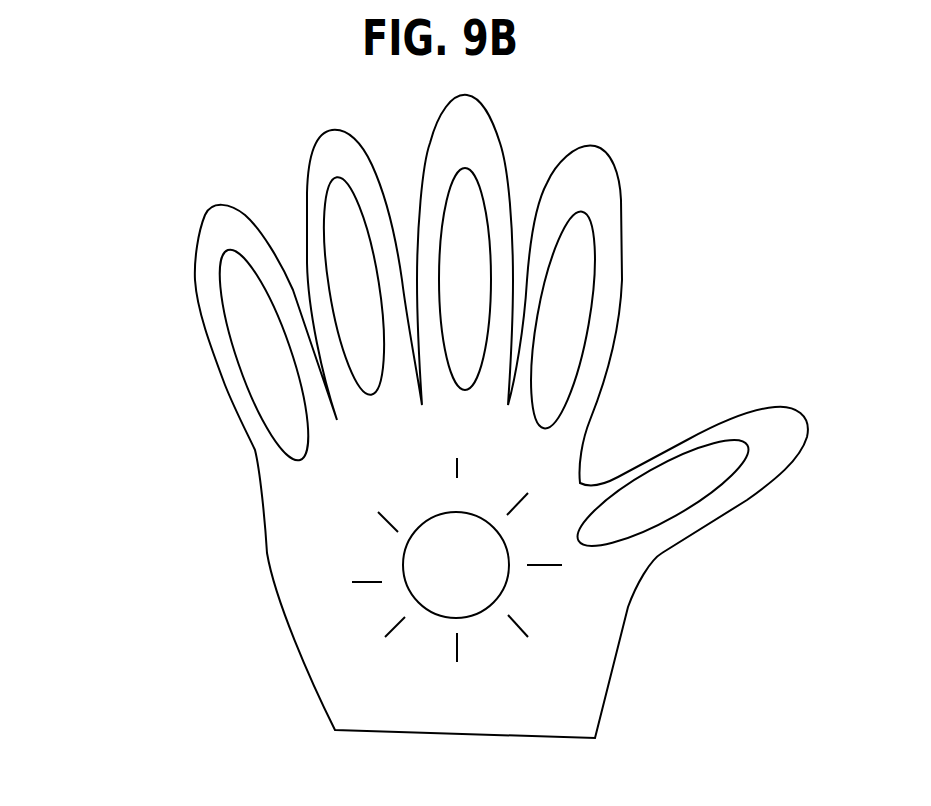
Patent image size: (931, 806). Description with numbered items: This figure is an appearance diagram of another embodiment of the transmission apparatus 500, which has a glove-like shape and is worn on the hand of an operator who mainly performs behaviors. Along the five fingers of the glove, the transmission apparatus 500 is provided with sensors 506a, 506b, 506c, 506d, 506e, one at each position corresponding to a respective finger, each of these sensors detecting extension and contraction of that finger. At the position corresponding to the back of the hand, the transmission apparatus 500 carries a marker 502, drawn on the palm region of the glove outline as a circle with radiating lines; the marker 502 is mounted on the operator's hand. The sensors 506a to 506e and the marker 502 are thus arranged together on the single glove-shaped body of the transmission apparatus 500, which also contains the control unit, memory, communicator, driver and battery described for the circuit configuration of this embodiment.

The transmission apparatus 500 is at (498, 142).
The marker 502 is at (404, 552).
The sensor 506a is at (705, 448).
The sensor 506b is at (595, 240).
The sensor 506c is at (465, 168).
The sensor 506d is at (327, 190).
The sensor 506e is at (220, 290).